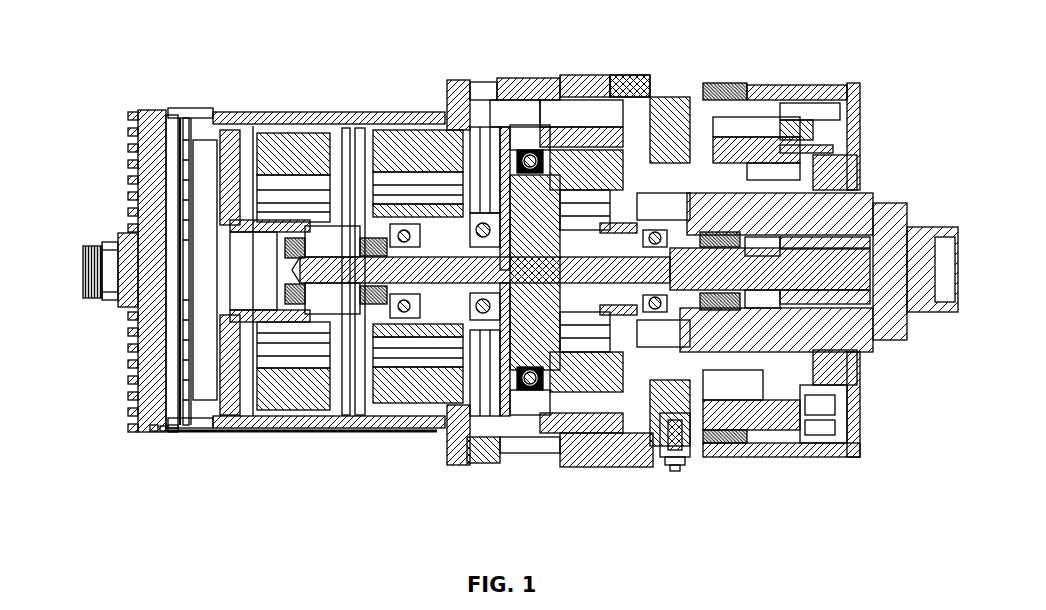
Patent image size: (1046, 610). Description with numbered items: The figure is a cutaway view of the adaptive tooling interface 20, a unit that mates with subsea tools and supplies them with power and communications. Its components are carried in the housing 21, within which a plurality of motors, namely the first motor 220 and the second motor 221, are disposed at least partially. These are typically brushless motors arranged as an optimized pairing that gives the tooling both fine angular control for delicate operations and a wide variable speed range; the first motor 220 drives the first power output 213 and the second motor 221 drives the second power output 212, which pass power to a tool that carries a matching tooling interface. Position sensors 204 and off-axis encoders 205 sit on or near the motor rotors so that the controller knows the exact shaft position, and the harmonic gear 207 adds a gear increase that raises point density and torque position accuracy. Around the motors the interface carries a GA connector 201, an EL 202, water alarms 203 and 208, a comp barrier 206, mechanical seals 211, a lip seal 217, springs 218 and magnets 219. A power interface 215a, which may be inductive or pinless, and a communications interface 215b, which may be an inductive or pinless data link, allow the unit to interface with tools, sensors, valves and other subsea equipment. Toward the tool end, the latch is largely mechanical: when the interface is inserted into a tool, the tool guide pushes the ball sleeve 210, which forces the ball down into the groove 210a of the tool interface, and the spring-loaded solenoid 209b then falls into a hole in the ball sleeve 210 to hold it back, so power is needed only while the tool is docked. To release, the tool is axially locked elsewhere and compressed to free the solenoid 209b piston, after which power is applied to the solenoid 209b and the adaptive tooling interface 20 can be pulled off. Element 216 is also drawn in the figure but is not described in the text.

The adaptive tooling interface 20 is at (130, 62).
The housing 21 is at (277, 432).
The GA connector 201 is at (100, 237).
The EL 202 is at (170, 340).
The water alarm 203 is at (167, 355).
The position sensor 204 is at (167, 427).
The off-axis encoder 205 is at (312, 160).
The comp barrier 206 is at (467, 370).
The harmonic gear 207 is at (450, 452).
The water alarm 208 is at (557, 397).
The solenoid 209b is at (680, 457).
The ball sleeve 210 is at (770, 433).
The interface groove 210a is at (833, 160).
The mechanical seal 211 is at (842, 400).
The second power output 212 is at (865, 368).
The first power output 213 is at (878, 336).
The power interface 215a is at (812, 120).
The communications interface 215b is at (765, 86).
The bearing 216 is at (713, 178).
The lip seal 217 is at (642, 105).
The spring 218 is at (652, 140).
The magnet 219 is at (458, 88).
The first motor 220 is at (397, 140).
The second motor 221 is at (252, 150).